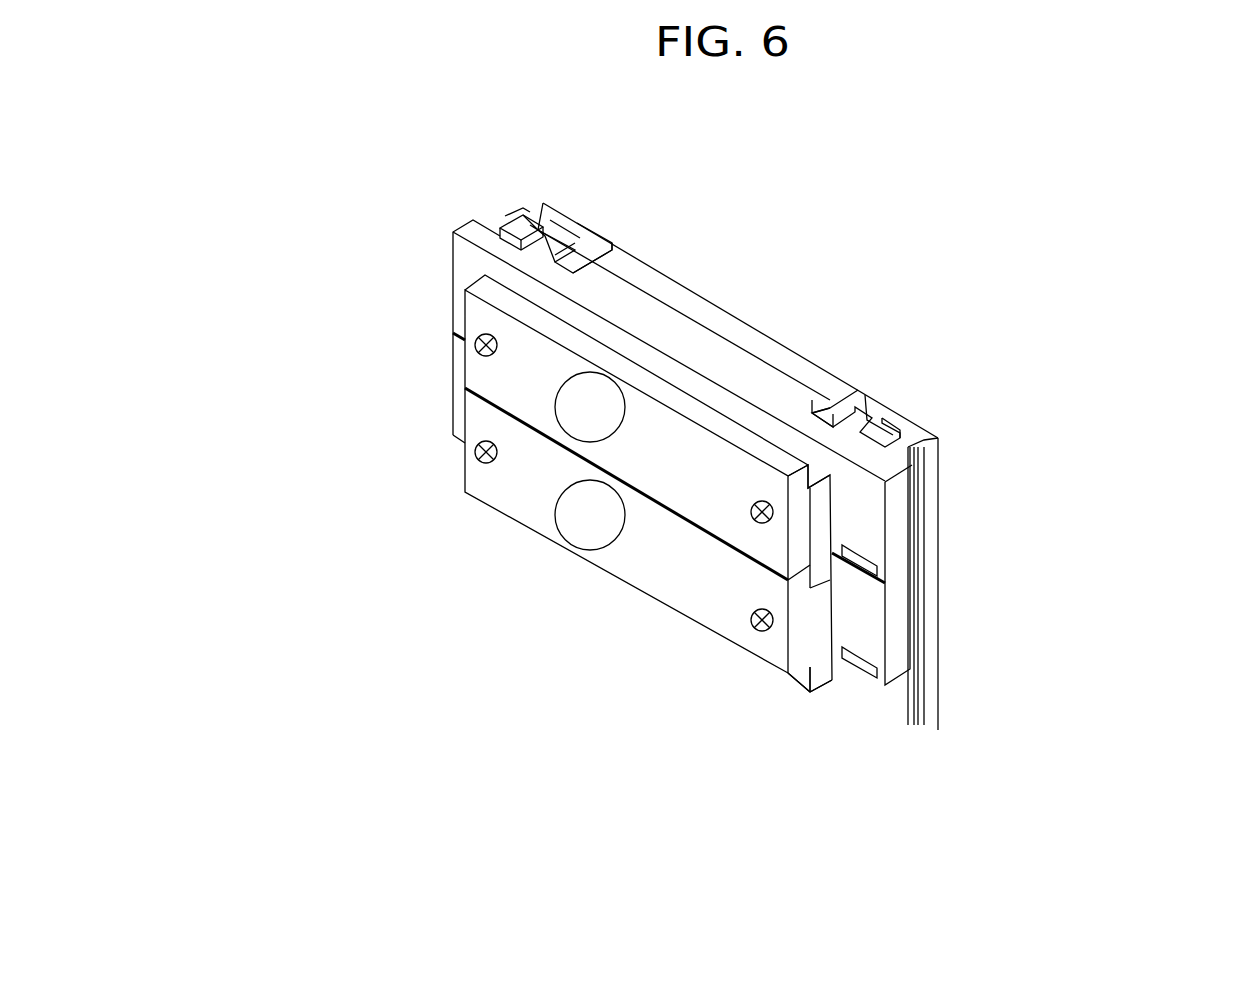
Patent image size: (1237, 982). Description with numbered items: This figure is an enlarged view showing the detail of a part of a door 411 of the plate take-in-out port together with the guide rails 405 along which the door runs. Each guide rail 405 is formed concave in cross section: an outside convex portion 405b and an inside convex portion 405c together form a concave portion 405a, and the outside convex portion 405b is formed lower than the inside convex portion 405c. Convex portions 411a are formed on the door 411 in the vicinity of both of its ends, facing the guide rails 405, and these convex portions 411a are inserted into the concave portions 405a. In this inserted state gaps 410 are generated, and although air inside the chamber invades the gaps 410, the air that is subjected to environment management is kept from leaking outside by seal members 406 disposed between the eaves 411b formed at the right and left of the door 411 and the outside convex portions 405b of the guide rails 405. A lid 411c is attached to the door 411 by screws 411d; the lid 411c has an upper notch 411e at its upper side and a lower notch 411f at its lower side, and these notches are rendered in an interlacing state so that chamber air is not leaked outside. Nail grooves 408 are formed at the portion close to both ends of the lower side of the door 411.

The guide rail 405 is at (580, 245).
The concave portion 405a is at (542, 228).
The outside convex portion 405b is at (523, 212).
The inside convex portion 405c is at (600, 250).
The seal member 406 is at (990, 395).
The nail groove 408 is at (852, 663).
The gap 410 is at (820, 400).
The door 411 is at (895, 550).
The convex portion 411a is at (583, 263).
The eave 411b is at (520, 243).
The lid 411c is at (815, 532).
The screw 411d is at (467, 457).
The upper notch 411e is at (820, 462).
The lower notch 411f is at (805, 683).